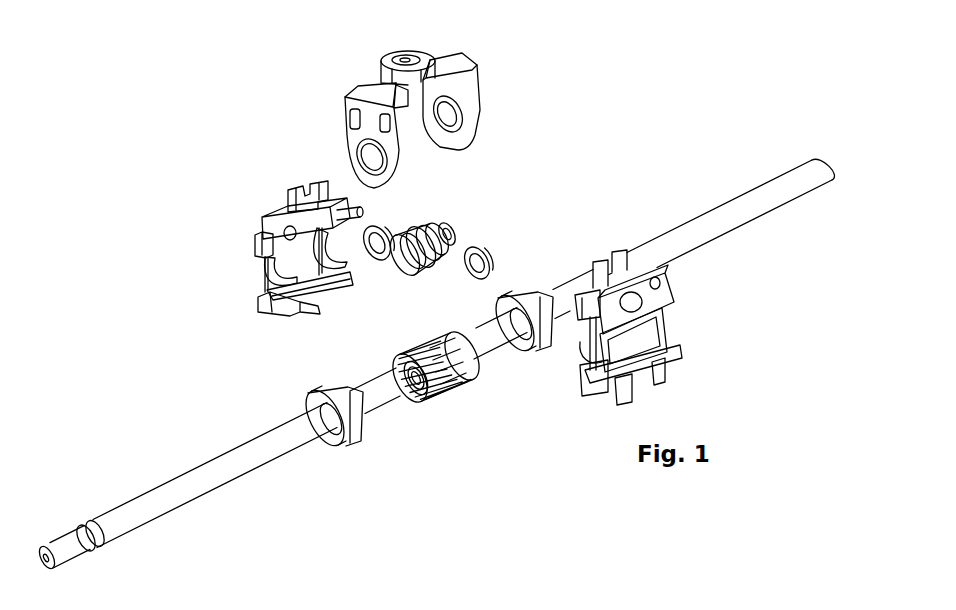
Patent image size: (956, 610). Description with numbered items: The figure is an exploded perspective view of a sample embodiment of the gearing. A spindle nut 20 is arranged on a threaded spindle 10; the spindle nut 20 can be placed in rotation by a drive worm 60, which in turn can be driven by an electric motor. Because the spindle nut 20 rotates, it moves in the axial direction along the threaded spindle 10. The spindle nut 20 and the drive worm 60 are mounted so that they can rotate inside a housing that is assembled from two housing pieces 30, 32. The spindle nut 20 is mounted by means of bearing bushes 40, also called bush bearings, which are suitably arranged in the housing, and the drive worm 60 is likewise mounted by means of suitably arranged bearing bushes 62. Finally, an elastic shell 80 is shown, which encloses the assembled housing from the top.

The threaded spindle 10 is at (812, 165).
The spindle nut 20 is at (460, 402).
The housing piece 30 is at (280, 197).
The housing piece 32 is at (670, 380).
The bearing bush 40 is at (355, 448).
The drive worm 60 is at (430, 235).
The bearing bush 62 is at (393, 225).
The elastic shell 80 is at (473, 53).